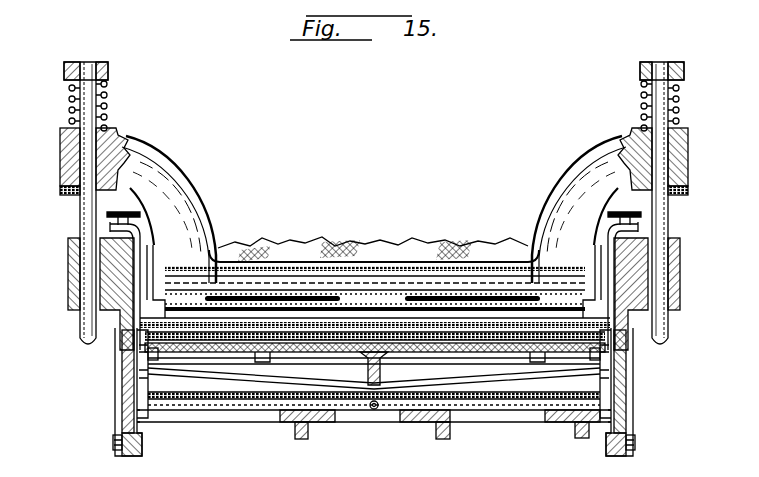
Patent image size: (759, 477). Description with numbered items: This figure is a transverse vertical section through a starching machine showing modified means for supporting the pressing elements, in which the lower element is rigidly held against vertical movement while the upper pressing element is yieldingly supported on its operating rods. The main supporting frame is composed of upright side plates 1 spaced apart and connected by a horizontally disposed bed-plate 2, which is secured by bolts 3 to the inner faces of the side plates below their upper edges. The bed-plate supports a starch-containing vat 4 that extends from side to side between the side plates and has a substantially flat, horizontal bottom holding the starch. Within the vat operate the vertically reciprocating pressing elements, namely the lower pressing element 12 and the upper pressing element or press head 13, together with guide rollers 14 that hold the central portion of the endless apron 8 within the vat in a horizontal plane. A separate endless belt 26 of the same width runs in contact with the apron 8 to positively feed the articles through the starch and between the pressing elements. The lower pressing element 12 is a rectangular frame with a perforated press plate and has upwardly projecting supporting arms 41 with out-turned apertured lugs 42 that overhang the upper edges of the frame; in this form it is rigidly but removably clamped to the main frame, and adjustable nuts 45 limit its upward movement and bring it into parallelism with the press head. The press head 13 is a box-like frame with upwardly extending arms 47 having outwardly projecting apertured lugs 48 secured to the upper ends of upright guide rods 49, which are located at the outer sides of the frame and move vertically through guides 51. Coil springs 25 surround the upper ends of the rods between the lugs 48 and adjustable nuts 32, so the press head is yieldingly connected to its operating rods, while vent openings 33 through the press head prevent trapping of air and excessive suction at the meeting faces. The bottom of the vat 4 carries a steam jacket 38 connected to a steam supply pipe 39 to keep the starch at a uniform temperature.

The side plates 1 is at (124, 384).
The bed-plate 2 is at (318, 432).
The bolts 3 is at (116, 446).
The vat 4 is at (397, 412).
The endless apron 8 is at (245, 353).
The lower pressing element 12 is at (292, 358).
The press head 13 is at (382, 300).
The guide rollers 14 is at (522, 382).
The coil springs 25 is at (106, 102).
The endless belt 26 is at (348, 236).
The adjustable nuts 32 is at (108, 70).
The vent openings 33 is at (290, 292).
The steam jacket 38 is at (484, 412).
The steam supply pipe 39 is at (373, 412).
The supporting arms 41 is at (150, 270).
The apertured lugs 42 is at (112, 225).
The adjustable nuts 45 is at (140, 214).
The upwardly extending arms 47 is at (180, 186).
The apertured lugs 48 is at (64, 174).
The guide rods 49 is at (86, 342).
The guides 51 is at (69, 277).